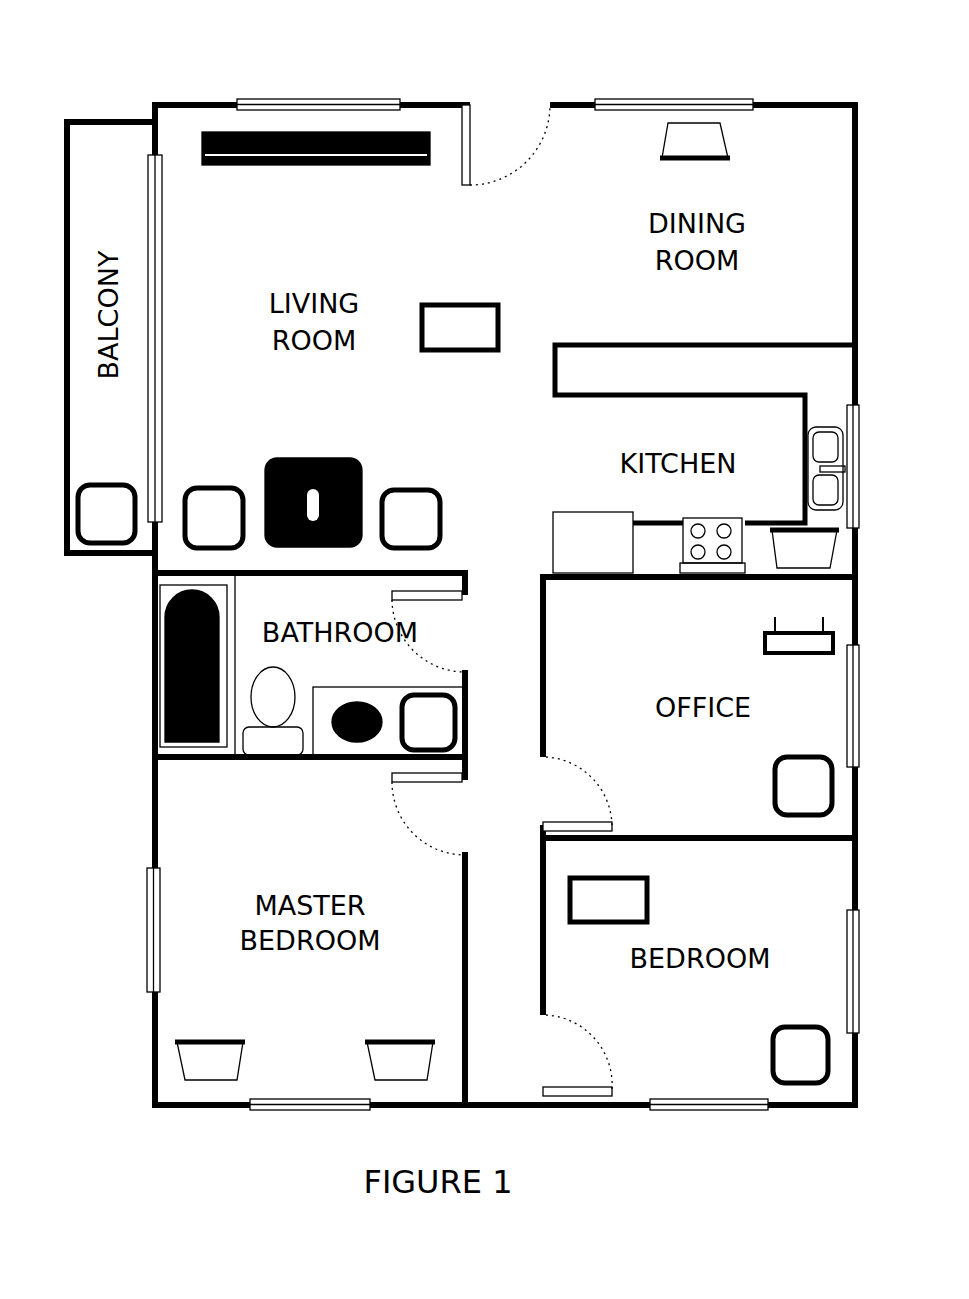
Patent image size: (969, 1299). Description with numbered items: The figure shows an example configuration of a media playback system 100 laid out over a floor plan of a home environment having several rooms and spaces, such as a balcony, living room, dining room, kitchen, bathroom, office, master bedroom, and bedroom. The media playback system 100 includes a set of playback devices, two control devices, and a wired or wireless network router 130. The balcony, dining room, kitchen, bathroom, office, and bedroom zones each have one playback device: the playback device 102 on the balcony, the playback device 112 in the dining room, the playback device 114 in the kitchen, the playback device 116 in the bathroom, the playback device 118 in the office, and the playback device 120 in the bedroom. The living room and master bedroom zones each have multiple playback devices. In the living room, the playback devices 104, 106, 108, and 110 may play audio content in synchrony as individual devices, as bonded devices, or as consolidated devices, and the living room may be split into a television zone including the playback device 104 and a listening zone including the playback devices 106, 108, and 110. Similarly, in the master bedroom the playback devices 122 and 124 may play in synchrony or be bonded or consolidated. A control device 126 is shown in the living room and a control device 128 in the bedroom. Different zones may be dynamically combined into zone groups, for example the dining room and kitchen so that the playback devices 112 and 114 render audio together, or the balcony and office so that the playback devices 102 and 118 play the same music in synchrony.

The media playback system 100 is at (553, 65).
The playback device 102 is at (91, 525).
The playback device 104 is at (316, 148).
The playback device 106 is at (198, 529).
The playback device 108 is at (395, 529).
The playback device 110 is at (297, 486).
The playback device 112 is at (679, 154).
The playback device 114 is at (788, 564).
The playback device 116 is at (413, 733).
The playback device 118 is at (787, 797).
The playback device 120 is at (784, 1066).
The playback device 122 is at (194, 1075).
The playback device 124 is at (384, 1075).
The control device 126 is at (444, 338).
The control device 128 is at (592, 911).
The network router 130 is at (765, 648).